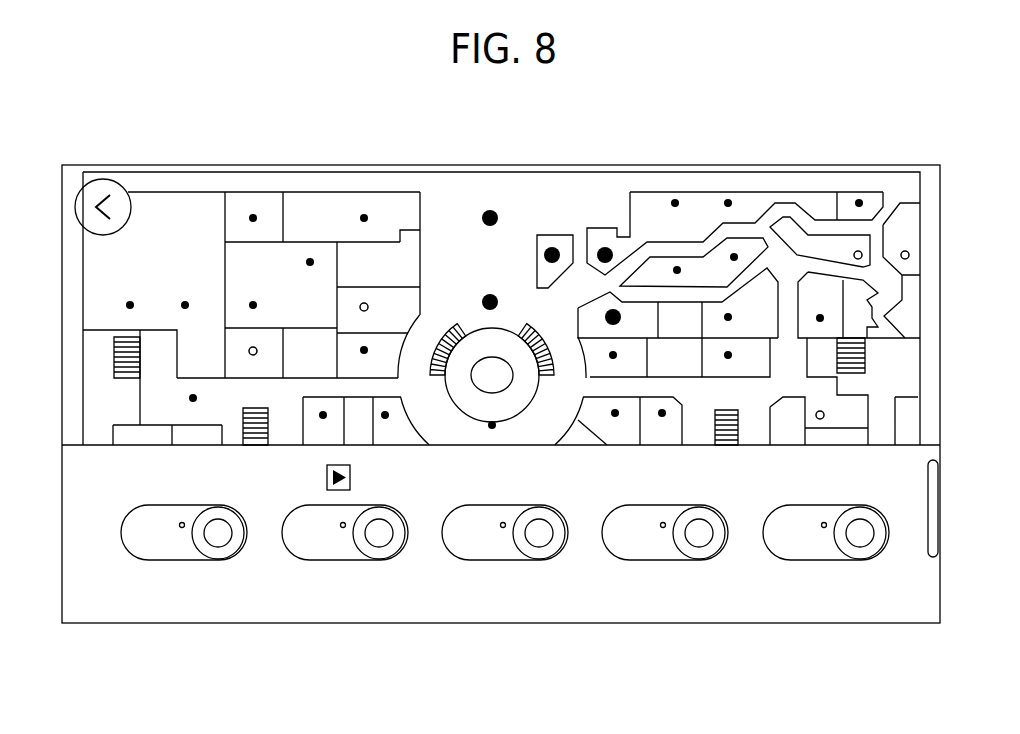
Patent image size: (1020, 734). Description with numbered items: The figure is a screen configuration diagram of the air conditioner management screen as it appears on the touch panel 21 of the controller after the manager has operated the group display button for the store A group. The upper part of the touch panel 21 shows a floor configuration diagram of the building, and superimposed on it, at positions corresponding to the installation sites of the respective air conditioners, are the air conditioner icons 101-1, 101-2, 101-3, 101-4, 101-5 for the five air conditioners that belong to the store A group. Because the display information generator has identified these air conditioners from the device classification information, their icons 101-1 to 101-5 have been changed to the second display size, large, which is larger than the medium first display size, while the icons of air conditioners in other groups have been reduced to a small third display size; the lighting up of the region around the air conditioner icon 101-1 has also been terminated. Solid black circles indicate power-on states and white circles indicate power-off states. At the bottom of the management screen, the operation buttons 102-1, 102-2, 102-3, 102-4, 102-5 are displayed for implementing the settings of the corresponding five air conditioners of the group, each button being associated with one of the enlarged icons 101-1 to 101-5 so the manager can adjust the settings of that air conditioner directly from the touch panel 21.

The touch panel 21 is at (873, 165).
The air conditioner icon 101-1 is at (490, 210).
The air conditioner icon 101-2 is at (490, 294).
The air conditioner icon 101-3 is at (552, 247).
The air conditioner icon 101-4 is at (604, 247).
The air conditioner icon 101-5 is at (621, 317).
The operation button 102-1 is at (122, 535).
The operation button 102-2 is at (359, 505).
The operation button 102-3 is at (519, 505).
The operation button 102-4 is at (679, 505).
The operation button 102-5 is at (840, 505).